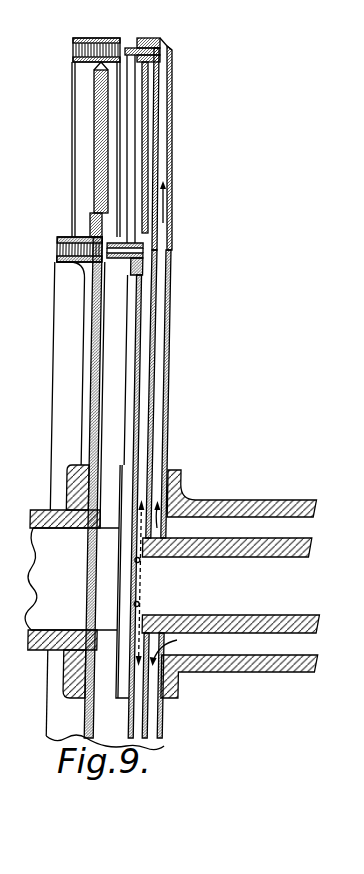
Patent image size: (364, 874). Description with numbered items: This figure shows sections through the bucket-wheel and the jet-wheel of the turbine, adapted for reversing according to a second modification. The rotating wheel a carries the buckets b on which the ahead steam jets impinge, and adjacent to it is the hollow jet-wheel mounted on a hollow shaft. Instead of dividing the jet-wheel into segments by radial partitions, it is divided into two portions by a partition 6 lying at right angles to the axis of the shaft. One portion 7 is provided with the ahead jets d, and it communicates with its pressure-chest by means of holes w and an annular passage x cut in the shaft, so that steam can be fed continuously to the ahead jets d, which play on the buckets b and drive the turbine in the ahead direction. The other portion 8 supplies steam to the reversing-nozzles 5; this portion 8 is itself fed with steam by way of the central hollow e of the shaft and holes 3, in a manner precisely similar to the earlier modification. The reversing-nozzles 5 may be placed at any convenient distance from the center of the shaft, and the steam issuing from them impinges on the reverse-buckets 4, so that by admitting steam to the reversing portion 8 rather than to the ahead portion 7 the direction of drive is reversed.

The buckets b is at (105, 44).
The ahead jets d is at (136, 46).
The reverse-buckets 4 is at (79, 265).
The reversing-nozzles 5 is at (124, 264).
The partition 6 is at (156, 337).
The portion of jet-wheel 7 is at (169, 368).
The rotating wheel a is at (97, 357).
The portion of jet-wheel 8 is at (143, 385).
The holes w is at (170, 521).
The annular passage x is at (231, 584).
The holes 3 is at (146, 563).
The central hollow of shaft e is at (193, 622).